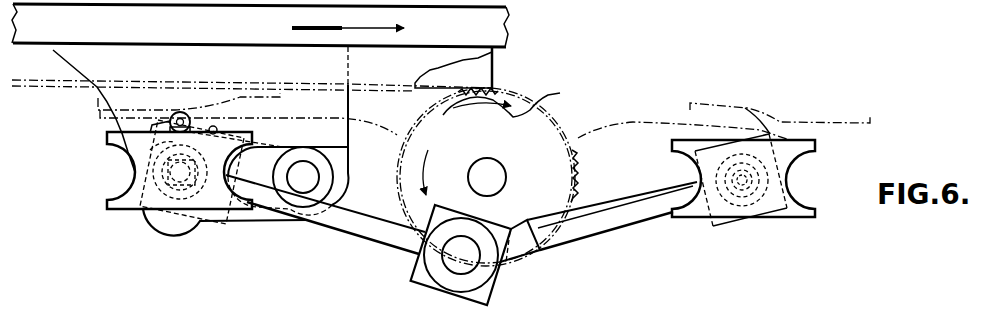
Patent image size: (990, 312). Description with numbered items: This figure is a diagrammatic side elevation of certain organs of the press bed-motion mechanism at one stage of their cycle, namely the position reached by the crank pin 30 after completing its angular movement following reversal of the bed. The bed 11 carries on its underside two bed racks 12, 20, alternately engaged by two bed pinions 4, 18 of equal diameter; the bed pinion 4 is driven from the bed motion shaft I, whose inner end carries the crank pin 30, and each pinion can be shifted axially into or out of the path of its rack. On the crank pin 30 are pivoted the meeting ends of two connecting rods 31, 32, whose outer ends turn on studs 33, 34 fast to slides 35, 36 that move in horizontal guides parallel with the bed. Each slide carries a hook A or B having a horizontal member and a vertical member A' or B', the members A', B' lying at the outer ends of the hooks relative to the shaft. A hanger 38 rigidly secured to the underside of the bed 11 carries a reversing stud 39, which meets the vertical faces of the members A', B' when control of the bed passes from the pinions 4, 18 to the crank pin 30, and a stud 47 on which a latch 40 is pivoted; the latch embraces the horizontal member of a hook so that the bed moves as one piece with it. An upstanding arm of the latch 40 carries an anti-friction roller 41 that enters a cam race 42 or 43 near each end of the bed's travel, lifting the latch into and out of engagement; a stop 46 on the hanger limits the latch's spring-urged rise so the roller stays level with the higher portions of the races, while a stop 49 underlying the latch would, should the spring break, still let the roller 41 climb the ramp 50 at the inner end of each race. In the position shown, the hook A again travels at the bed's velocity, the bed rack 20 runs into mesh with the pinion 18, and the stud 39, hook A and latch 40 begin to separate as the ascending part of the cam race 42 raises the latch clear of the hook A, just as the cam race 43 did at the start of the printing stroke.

The bed 11 is at (506, 36).
The bed rack 12 is at (58, 82).
The bed pinion 4 is at (578, 169).
The bed pinion 18 is at (478, 97).
The bed rack 20 is at (478, 88).
The bed motion shaft I is at (505, 170).
The crank pin 30 is at (508, 262).
The connecting rod 31 is at (351, 224).
The connecting rod 32 is at (633, 208).
The stud 33 is at (137, 148).
The stud 34 is at (745, 171).
The slide 35 is at (116, 203).
The slide 36 is at (801, 216).
The hanger 38 is at (349, 176).
The reversing stud 39 is at (177, 199).
The latch 40 is at (144, 174).
The anti-friction roller 41 is at (179, 111).
The cam race 42 is at (213, 99).
The cam race 43 is at (753, 111).
The stop 46 is at (215, 127).
The stud 47 is at (307, 176).
The stop 49 is at (242, 194).
The ramp 50 is at (380, 128).
The hook A is at (185, 213).
The vertical member A' is at (147, 201).
The hook B is at (741, 199).
The vertical member B' is at (747, 220).